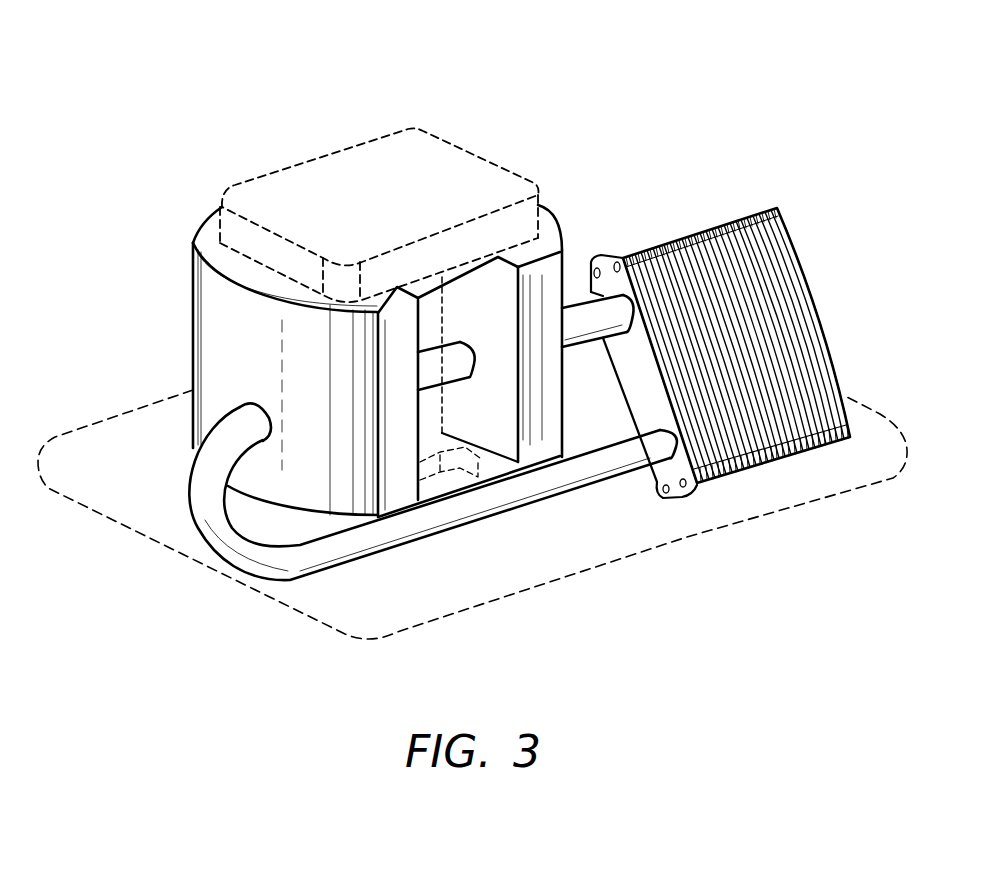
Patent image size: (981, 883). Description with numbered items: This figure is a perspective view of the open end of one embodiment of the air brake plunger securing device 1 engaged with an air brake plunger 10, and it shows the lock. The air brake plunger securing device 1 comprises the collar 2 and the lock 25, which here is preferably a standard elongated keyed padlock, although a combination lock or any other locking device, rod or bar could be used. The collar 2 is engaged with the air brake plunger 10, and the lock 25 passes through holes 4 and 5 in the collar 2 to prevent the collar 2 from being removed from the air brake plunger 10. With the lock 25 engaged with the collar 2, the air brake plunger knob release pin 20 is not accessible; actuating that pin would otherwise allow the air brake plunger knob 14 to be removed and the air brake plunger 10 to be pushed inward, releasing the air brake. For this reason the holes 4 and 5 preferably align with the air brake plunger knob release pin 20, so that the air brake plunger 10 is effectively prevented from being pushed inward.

The air brake plunger securing device 1 is at (562, 153).
The collar 2 is at (212, 238).
The hole 4 is at (238, 410).
The hole 5 is at (471, 382).
The air brake plunger 10 is at (456, 94).
The air brake plunger knob 14 is at (366, 152).
The air brake plunger knob release pin 20 is at (435, 343).
The lock 25 is at (600, 297).